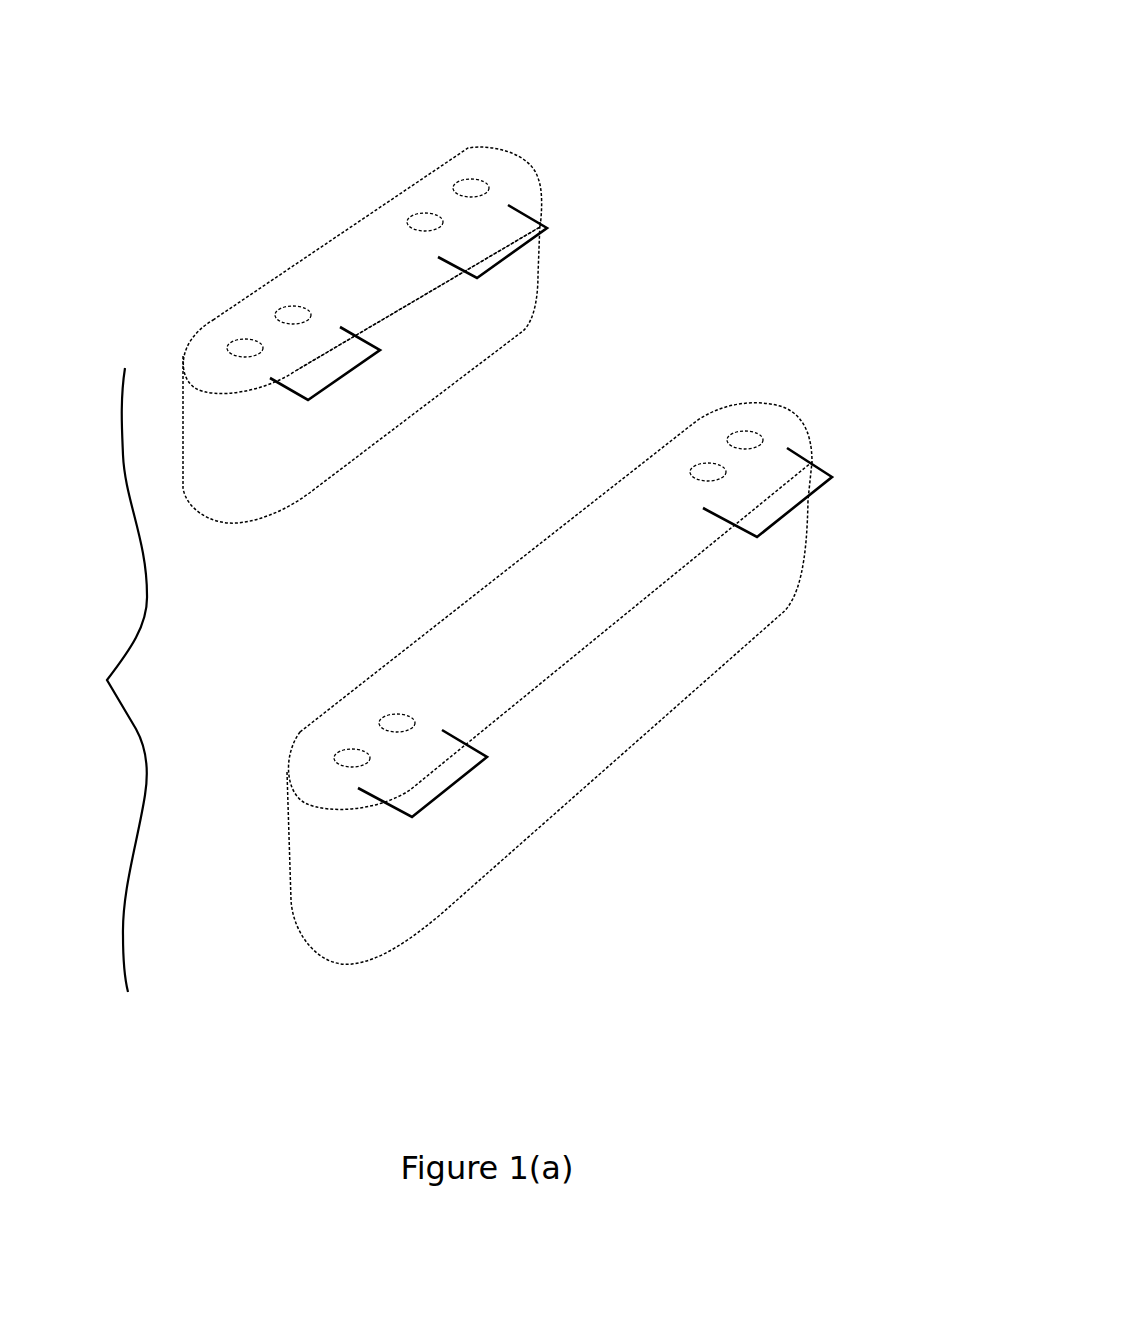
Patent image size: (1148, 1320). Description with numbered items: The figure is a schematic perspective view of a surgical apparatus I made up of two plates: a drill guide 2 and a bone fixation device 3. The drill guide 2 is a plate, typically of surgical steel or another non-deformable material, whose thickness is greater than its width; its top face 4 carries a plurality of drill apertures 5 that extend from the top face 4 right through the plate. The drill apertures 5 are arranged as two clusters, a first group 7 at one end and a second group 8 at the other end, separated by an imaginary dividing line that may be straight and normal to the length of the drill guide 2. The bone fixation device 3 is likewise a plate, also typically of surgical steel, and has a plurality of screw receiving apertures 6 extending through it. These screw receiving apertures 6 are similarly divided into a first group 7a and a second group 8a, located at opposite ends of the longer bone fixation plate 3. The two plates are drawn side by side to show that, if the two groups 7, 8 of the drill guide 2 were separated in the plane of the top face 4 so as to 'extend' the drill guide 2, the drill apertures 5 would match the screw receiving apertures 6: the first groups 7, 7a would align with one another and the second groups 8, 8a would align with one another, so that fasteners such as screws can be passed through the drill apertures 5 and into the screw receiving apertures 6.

The surgical apparatus I is at (108, 680).
The drill guide 2 is at (562, 142).
The bone fixation device 3 is at (800, 375).
The top face 4 is at (378, 295).
The drill apertures 5 is at (244, 342).
The screw receiving apertures 6 is at (349, 748).
The first group of drill apertures 7 is at (492, 243).
The second group of drill apertures 8 is at (325, 366).
The first group of screw receiving apertures 7a is at (772, 492).
The second group of screw receiving apertures 8a is at (422, 773).